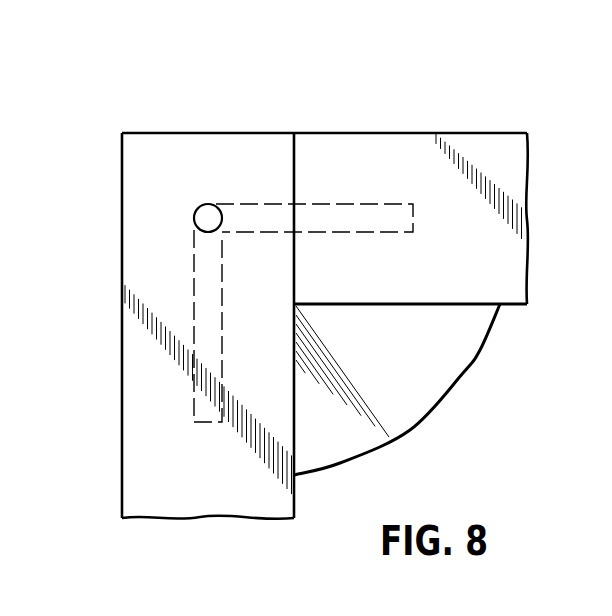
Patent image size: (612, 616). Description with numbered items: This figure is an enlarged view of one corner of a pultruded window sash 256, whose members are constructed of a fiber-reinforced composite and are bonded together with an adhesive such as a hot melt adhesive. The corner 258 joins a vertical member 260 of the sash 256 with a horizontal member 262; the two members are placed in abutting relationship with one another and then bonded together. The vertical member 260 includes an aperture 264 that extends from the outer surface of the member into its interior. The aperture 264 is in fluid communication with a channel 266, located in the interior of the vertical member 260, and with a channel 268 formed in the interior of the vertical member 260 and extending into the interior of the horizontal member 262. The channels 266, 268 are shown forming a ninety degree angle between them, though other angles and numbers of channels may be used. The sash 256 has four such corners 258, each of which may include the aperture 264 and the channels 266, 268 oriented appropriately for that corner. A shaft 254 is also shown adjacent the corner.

The shaft 254 is at (396, 373).
The window sash 256 is at (294, 269).
The corner 258 is at (177, 297).
The vertical member 260 is at (121, 372).
The horizontal member 262 is at (353, 132).
The aperture 264 is at (194, 217).
The channel 266 is at (193, 248).
The channel 268 is at (263, 203).